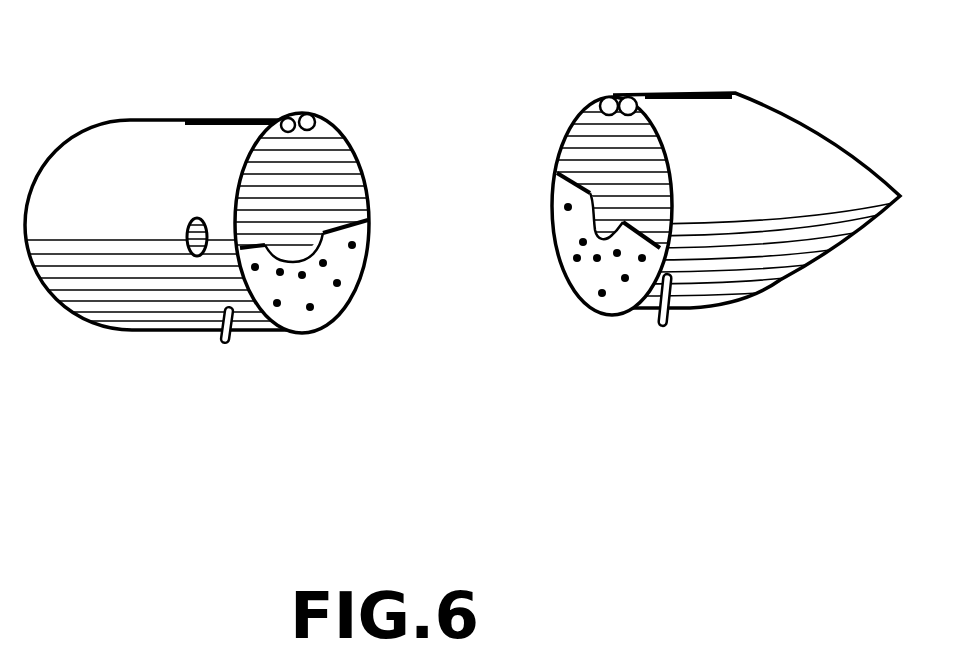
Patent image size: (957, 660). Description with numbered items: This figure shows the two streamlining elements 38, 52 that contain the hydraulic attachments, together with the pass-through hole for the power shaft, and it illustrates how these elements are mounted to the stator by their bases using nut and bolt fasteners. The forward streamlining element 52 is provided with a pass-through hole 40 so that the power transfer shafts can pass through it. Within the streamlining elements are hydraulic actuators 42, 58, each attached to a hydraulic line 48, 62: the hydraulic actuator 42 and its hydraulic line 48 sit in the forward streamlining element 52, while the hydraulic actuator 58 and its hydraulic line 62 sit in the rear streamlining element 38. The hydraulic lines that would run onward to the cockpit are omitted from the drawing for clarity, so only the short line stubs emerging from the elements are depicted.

The streamlining element 38 is at (686, 328).
The pass-through hole 40 is at (197, 255).
The hydraulic actuator 42 is at (298, 113).
The hydraulic line 48 is at (222, 343).
The streamlining element 52 is at (210, 152).
The hydraulic actuator 58 is at (629, 96).
The hydraulic line 62 is at (658, 323).